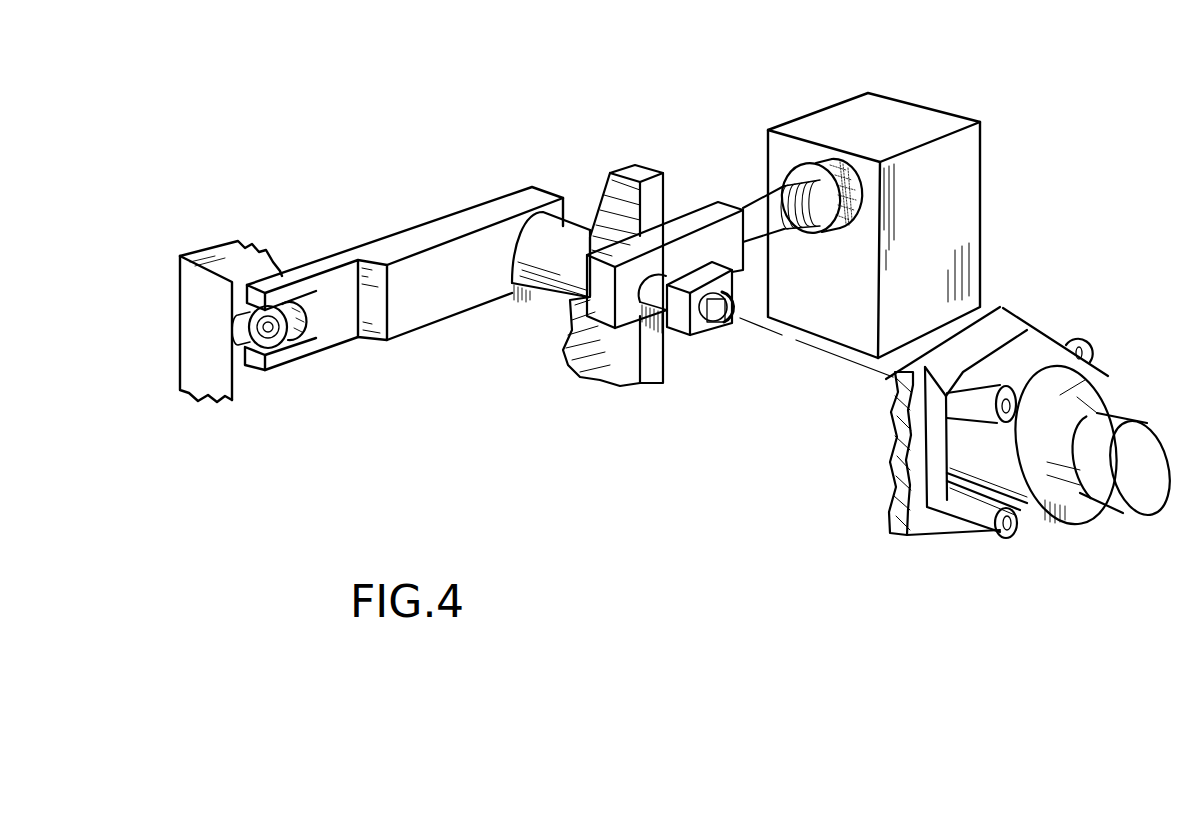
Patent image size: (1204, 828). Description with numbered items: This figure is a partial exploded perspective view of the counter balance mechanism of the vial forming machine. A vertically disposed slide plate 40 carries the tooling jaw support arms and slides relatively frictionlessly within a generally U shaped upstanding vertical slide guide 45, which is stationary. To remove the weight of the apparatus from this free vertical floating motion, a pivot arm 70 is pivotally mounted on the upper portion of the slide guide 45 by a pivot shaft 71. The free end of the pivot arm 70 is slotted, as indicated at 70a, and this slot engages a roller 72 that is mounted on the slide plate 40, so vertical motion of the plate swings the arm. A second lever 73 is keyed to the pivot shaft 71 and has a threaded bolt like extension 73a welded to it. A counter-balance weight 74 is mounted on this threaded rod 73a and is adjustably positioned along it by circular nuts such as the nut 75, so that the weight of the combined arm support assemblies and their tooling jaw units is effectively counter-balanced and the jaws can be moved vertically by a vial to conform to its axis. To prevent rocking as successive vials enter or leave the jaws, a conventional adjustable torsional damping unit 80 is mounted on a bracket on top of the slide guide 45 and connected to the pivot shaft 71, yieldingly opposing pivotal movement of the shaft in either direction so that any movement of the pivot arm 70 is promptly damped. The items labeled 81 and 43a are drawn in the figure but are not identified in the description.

The slide plate 40 is at (222, 262).
The pivot arm 70 is at (446, 214).
The slot 70a is at (283, 310).
The roller 72 is at (280, 343).
The pivot shaft 71 is at (575, 220).
The vertical slide guide 45 is at (638, 162).
The second lever 73 is at (707, 215).
The clamp screw 81 is at (657, 288).
The rod 43a is at (757, 214).
The threaded bolt like extension 73a is at (780, 207).
The circular nut 75 is at (813, 163).
The counter-balance weight 74 is at (983, 198).
The torsional damping unit 80 is at (1091, 359).